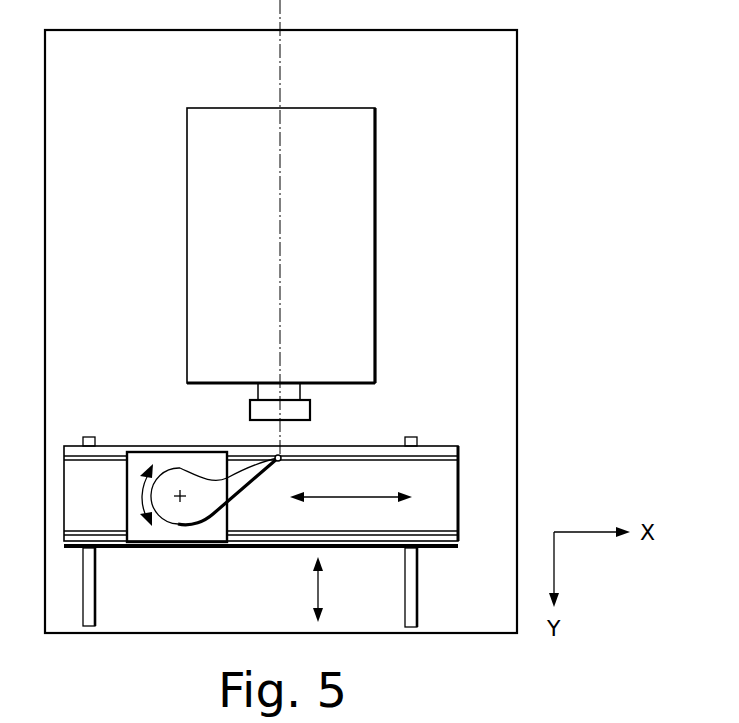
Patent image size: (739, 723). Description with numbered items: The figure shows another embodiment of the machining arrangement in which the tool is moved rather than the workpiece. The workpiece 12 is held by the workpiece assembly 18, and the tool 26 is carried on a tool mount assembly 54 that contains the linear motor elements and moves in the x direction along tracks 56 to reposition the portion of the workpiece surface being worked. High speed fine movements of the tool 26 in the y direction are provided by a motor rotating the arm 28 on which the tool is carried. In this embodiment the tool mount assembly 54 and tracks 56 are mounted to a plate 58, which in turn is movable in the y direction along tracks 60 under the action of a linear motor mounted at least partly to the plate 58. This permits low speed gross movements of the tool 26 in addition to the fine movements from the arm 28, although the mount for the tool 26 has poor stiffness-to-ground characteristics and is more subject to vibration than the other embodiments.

The workpiece 12 is at (293, 410).
The workpiece assembly 18 is at (327, 113).
The tool 26 is at (275, 456).
The arm 28 is at (177, 515).
The tool mount assembly 54 is at (210, 530).
The tracks 56 is at (460, 457).
The plate 58 is at (342, 541).
The tracks 60 is at (92, 572).